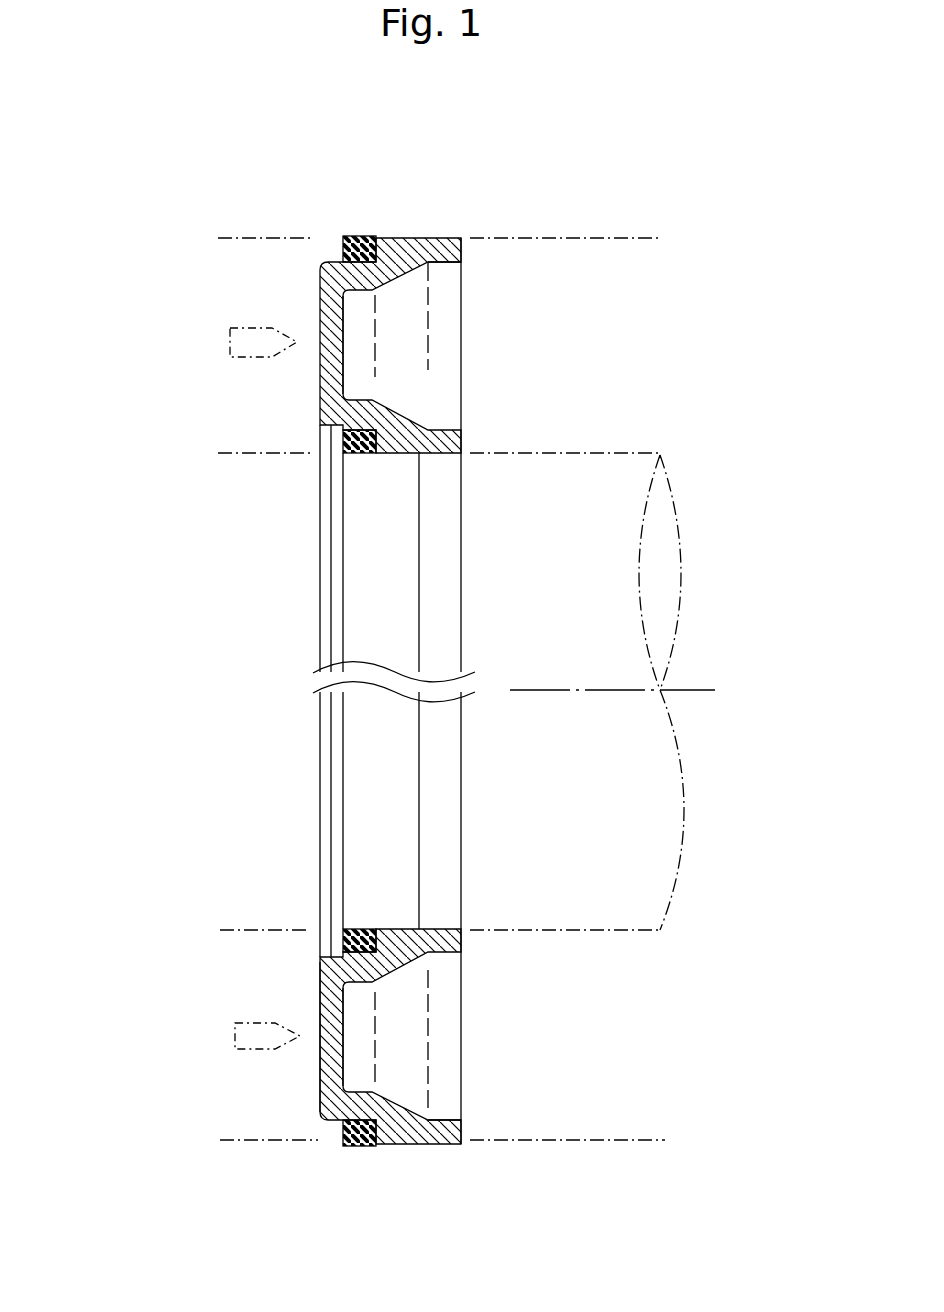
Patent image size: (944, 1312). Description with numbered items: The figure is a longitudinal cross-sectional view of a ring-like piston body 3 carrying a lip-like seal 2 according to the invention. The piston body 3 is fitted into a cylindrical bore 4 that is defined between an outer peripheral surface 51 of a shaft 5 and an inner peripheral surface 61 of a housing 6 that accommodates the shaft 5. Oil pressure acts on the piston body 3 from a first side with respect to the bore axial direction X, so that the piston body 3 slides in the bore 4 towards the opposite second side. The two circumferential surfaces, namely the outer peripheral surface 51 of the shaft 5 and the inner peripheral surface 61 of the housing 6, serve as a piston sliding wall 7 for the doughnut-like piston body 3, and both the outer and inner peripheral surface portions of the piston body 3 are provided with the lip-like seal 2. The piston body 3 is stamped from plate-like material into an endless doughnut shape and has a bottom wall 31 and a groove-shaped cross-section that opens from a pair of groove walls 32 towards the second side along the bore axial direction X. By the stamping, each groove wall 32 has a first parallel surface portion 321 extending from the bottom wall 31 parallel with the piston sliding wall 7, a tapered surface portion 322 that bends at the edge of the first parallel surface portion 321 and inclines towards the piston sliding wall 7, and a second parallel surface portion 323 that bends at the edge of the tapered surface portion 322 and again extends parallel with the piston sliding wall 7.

The lip-like seal 2 is at (366, 236).
The piston body 3 is at (463, 376).
The bottom wall 31 is at (318, 1072).
The groove wall 32 is at (463, 500).
The first parallel surface portion 321 is at (347, 290).
The tapered surface portion 322 is at (400, 278).
The second parallel surface portion 323 is at (441, 264).
The bore 4 is at (613, 1053).
The shaft 5 is at (597, 452).
The housing 6 is at (614, 242).
The piston sliding wall 7 is at (101, 293).
The outer peripheral surface 51 is at (255, 450).
The inner peripheral surface 61 is at (255, 240).
The bore axial direction X is at (702, 688).